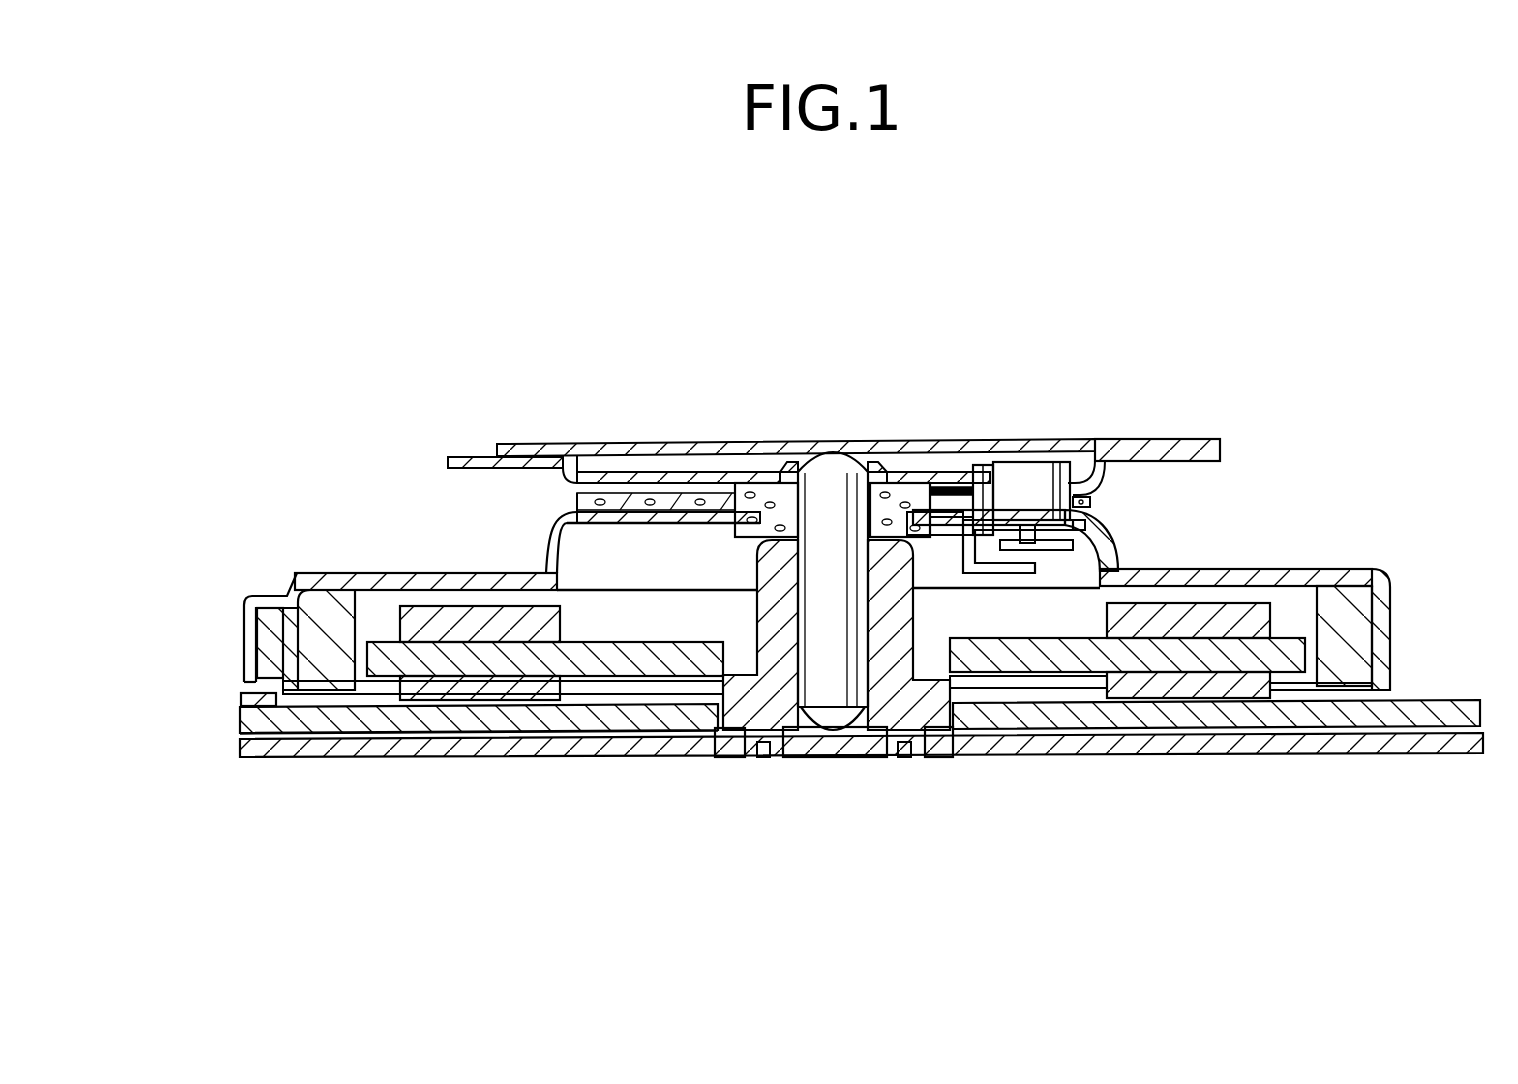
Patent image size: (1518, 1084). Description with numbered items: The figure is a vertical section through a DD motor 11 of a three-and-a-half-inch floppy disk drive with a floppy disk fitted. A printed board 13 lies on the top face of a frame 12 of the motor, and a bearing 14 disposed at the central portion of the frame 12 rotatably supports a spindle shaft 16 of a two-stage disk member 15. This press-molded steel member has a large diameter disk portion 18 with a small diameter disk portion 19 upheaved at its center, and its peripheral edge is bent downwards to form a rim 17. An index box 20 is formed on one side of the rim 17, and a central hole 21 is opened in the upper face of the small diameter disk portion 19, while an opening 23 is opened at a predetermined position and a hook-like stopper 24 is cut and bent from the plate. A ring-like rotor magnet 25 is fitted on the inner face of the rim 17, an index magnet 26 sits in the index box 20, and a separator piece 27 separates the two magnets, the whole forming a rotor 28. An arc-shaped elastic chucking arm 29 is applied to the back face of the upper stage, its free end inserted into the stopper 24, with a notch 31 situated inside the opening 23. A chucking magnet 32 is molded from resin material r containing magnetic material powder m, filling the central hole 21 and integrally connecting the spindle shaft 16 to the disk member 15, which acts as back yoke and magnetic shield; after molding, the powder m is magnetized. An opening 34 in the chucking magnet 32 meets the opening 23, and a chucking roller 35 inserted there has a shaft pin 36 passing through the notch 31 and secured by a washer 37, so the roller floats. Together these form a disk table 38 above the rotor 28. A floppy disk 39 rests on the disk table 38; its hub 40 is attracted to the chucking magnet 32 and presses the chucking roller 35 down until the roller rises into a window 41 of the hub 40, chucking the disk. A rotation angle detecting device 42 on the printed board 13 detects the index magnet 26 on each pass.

The DD motor 11 is at (800, 774).
The frame 12 is at (1445, 757).
The printed board 13 is at (1468, 700).
The bearing 14 is at (893, 718).
The two-stage disk member 15 is at (1385, 558).
The spindle shaft 16 is at (832, 690).
The rim 17 is at (1392, 600).
The large diameter disk portion 18 is at (1285, 569).
The small diameter disk portion 19 is at (1107, 522).
The index box 20 is at (252, 598).
The central hole 21 is at (775, 485).
The opening 23 is at (1000, 480).
The stopper 24 is at (1010, 550).
The rotor magnet 25 is at (343, 678).
The index magnet 26 is at (265, 635).
The separator piece 27 is at (285, 694).
The rotor 28 is at (332, 556).
The chucking arm 29 is at (968, 527).
The notch 31 is at (1075, 536).
The chucking magnet 32 is at (580, 503).
The opening 34 is at (975, 485).
The chucking roller 35 is at (1045, 480).
The shaft pin 36 is at (1045, 540).
The washer 37 is at (1088, 523).
The disk table 38 is at (908, 457).
The 3.5-inch floppy disk 39 is at (1152, 425).
The hub 40 is at (710, 483).
The window 41 is at (1078, 483).
The rotation angle detecting device 42 is at (262, 698).
The resin material r is at (600, 503).
The magnetic material powder m is at (648, 503).